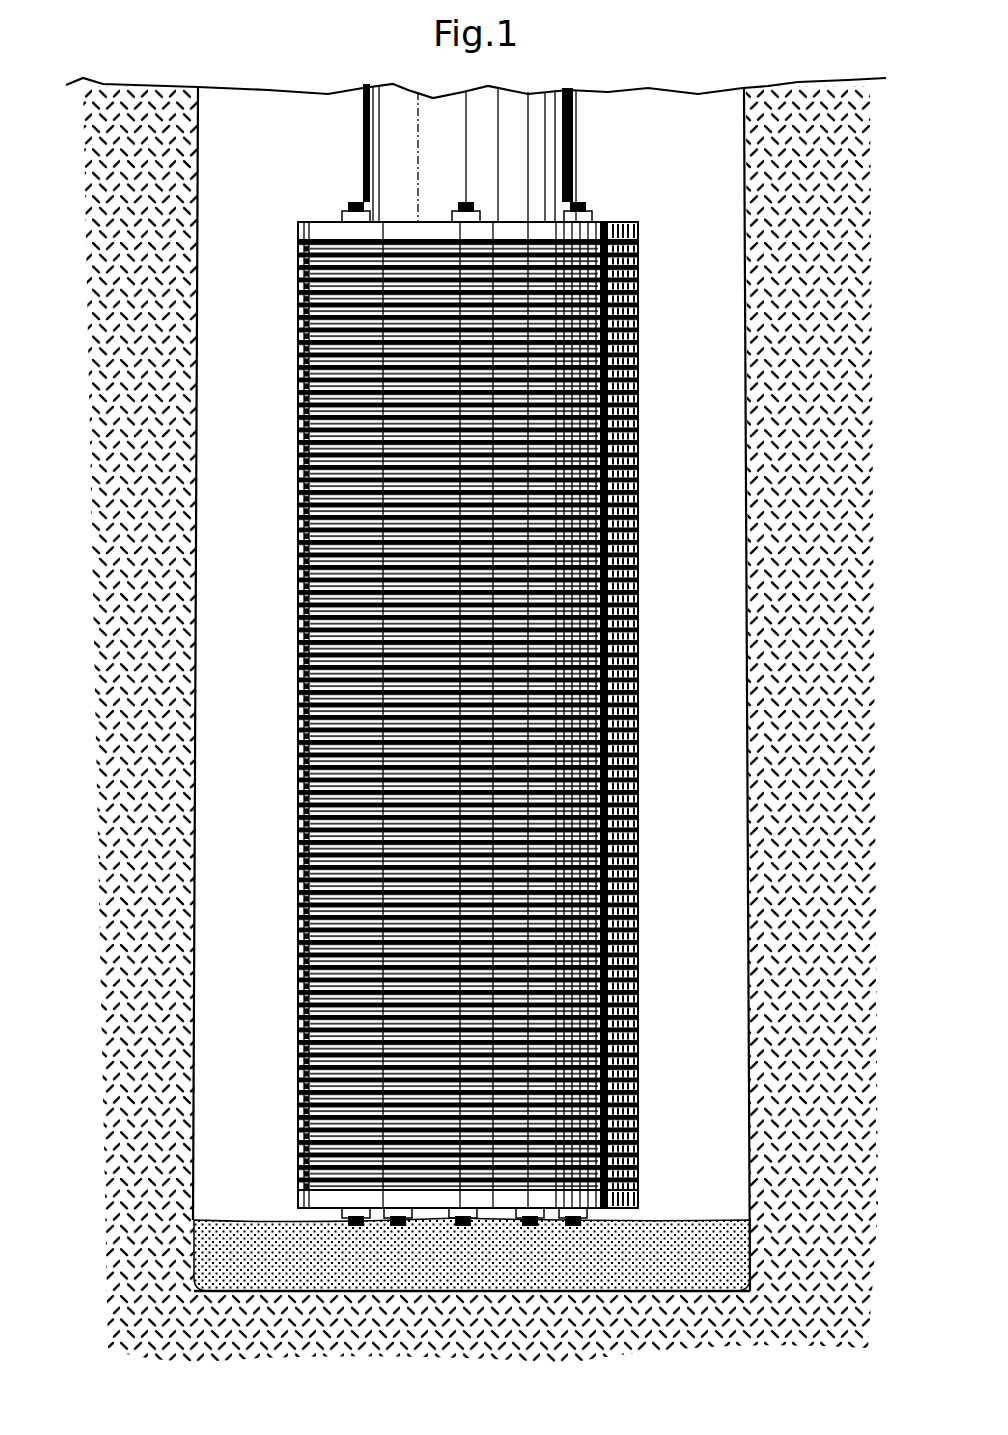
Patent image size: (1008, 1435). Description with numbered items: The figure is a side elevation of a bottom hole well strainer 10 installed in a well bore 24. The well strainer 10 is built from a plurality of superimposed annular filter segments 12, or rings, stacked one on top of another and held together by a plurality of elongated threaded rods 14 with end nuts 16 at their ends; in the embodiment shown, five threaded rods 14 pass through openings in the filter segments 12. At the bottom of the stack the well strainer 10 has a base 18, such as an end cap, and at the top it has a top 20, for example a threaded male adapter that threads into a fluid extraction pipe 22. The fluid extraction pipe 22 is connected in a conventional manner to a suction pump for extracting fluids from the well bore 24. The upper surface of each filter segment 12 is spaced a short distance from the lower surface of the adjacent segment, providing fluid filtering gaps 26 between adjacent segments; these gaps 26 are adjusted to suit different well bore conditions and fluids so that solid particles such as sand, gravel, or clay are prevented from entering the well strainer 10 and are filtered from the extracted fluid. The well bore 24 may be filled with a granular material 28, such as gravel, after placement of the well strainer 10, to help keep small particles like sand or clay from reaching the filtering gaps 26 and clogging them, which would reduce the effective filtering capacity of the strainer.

The bottom hole well strainer 10 is at (478, 655).
The filter segments 12 is at (630, 357).
The threaded rods 14 is at (350, 193).
The end nuts 16 is at (335, 210).
The base 18 is at (625, 1190).
The top 20 is at (618, 214).
The fluid extraction pipe 22 is at (355, 118).
The well bore 24 is at (185, 432).
The filtering gaps 26 is at (292, 393).
The granular material 28 is at (198, 1212).